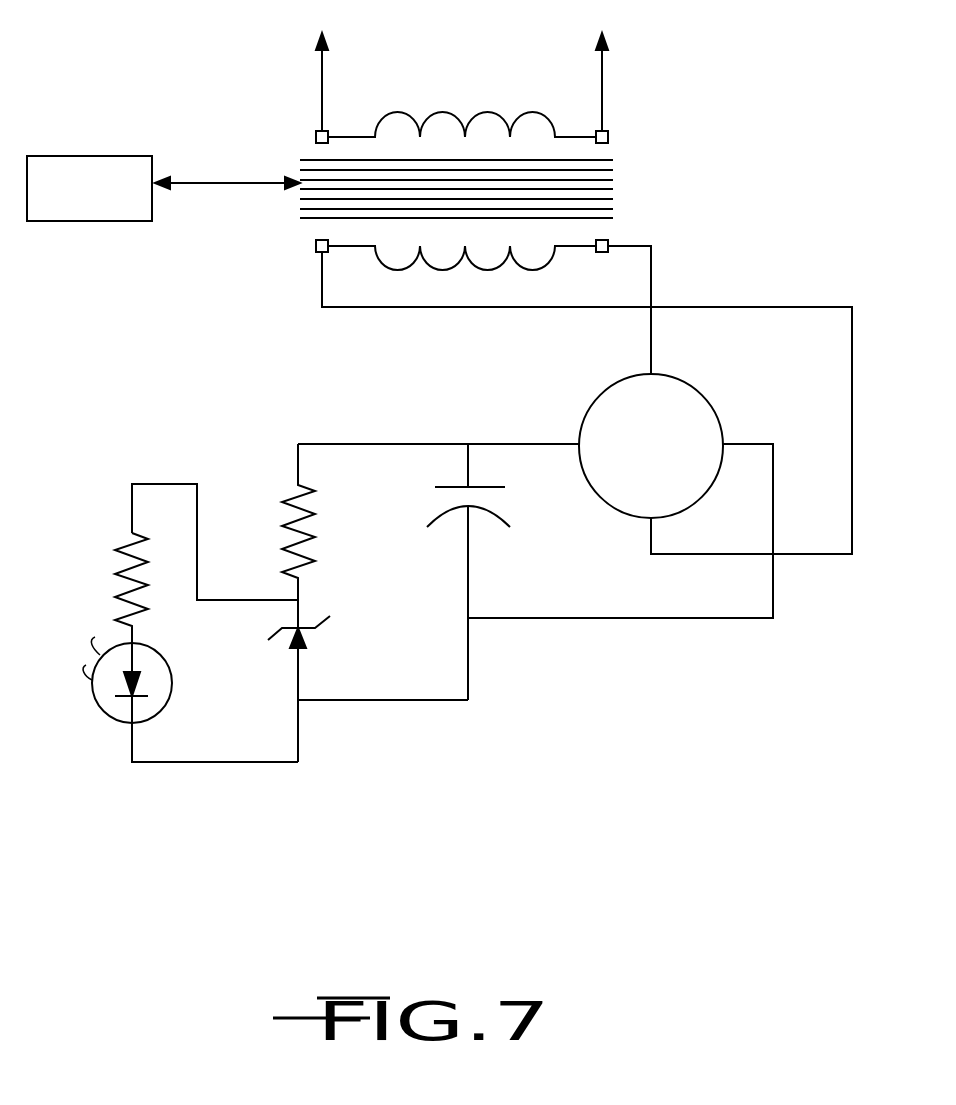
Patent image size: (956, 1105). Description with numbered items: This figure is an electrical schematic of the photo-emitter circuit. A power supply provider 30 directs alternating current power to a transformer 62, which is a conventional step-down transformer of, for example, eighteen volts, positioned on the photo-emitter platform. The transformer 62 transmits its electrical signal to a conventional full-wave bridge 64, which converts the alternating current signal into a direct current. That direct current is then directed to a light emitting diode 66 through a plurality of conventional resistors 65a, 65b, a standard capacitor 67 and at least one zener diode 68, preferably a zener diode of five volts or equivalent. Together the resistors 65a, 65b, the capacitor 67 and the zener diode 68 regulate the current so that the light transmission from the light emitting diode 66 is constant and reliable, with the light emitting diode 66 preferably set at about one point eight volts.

The power supply provider 30 is at (89, 188).
The transformer 62 is at (450, 112).
The full-wave bridge 64 is at (703, 395).
The resistor 65a is at (283, 518).
The resistor 65b is at (117, 583).
The light emitting diode 66 is at (102, 708).
The capacitor 67 is at (455, 487).
The zener diode 68 is at (315, 628).